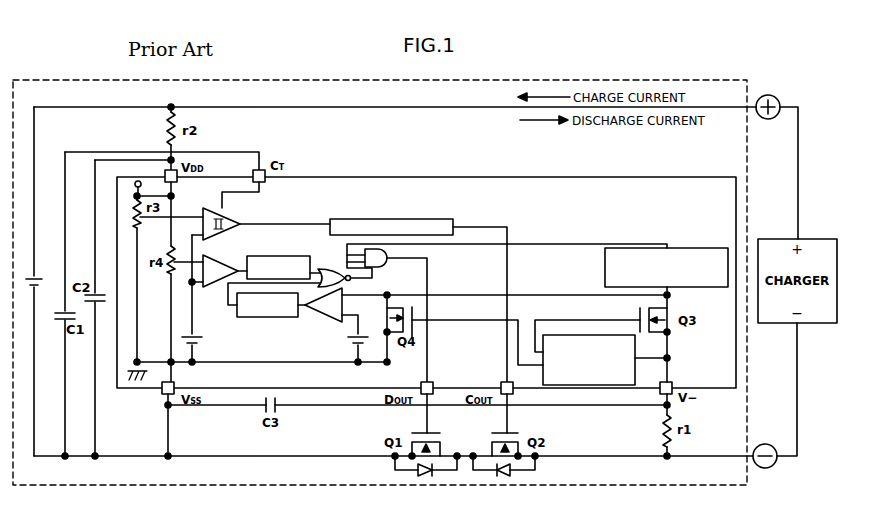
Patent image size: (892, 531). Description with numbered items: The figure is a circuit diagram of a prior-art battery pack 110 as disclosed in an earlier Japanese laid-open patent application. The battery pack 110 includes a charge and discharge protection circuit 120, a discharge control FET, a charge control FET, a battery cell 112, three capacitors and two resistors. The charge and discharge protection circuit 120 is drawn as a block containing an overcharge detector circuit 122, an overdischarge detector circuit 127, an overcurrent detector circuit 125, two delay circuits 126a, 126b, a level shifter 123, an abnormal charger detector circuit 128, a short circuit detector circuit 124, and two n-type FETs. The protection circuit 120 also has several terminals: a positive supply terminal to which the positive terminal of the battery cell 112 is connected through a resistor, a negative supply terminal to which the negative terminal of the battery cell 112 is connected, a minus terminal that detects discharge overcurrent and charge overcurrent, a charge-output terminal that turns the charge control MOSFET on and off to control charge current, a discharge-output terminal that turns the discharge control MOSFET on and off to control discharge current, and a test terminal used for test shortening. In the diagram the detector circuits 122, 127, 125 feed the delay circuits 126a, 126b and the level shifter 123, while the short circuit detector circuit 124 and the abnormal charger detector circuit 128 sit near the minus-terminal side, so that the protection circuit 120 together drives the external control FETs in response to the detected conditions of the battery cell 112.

The battery pack 110 is at (698, 81).
The battery cell 112 is at (37, 279).
The charge and discharge protection circuit 120 is at (655, 177).
The overcharge detector circuit 122 is at (228, 222).
The level shifter 123 is at (412, 219).
The short circuit detector circuit 124 is at (682, 248).
The overcurrent detector circuit 125 is at (330, 322).
The delay circuit 126a is at (282, 256).
The delay circuit 126b is at (268, 317).
The overdischarge detector circuit 127 is at (212, 290).
The abnormal charger detector circuit 128 is at (648, 352).